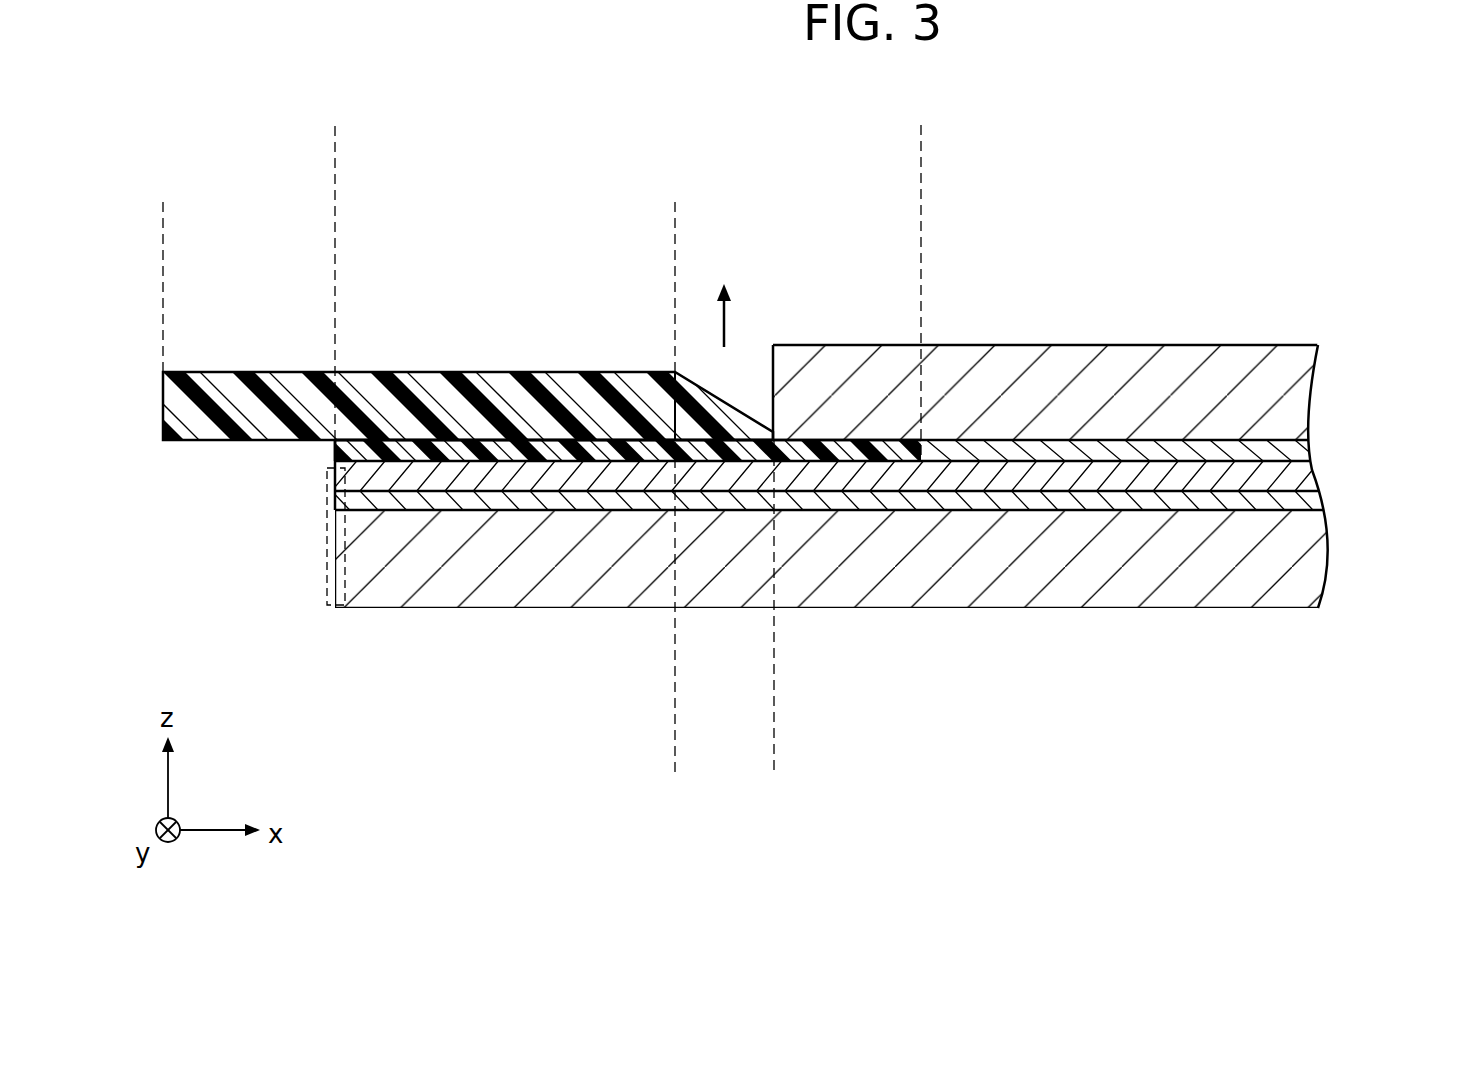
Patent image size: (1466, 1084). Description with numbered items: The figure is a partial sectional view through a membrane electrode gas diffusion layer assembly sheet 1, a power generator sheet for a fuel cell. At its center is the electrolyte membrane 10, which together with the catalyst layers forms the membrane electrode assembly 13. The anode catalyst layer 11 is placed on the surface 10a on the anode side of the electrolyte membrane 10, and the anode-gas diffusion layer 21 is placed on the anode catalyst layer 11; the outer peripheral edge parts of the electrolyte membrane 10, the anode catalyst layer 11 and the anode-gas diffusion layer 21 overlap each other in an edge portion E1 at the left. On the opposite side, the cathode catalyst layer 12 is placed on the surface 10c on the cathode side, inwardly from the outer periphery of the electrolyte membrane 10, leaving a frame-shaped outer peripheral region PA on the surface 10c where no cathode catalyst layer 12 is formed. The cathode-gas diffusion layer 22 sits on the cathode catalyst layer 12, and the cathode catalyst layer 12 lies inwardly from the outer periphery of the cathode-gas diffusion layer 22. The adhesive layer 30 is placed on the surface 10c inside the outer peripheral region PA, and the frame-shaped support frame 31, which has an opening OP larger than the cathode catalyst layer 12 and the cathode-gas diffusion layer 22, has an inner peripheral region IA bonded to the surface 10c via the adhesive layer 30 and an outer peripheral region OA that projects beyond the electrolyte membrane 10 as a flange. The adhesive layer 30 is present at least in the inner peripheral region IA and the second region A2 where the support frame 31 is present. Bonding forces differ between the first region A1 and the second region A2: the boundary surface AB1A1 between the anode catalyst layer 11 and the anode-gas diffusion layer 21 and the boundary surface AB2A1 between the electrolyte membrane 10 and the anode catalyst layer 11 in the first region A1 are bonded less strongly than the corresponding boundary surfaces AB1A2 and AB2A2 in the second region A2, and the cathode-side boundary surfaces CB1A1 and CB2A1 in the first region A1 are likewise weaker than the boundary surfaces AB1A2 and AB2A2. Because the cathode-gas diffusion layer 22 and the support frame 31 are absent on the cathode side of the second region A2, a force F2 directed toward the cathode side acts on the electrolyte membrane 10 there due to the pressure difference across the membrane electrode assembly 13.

The membrane electrode gas diffusion layer assembly sheet 1 is at (1378, 120).
The cathode-gas diffusion layer 22 is at (1268, 373).
The anode-gas diffusion layer 21 is at (1293, 578).
The membrane electrode assembly 13 is at (898, 474).
The cathode catalyst layer 12 is at (1284, 452).
The electrolyte membrane 10 is at (876, 474).
The anode catalyst layer 11 is at (877, 512).
The surface on the cathode side 10c is at (1244, 461).
The surface on the anode side 10a is at (1238, 492).
The support frame 31 is at (177, 403).
The adhesive layer 30 is at (348, 449).
The edge portion E1 is at (327, 529).
The opening OP is at (698, 386).
The force F2 is at (727, 327).
The boundary surface between the electrolyte membrane and the cathode catalyst layer CB2A1 is at (1026, 458).
The boundary surface between the cathode catalyst layer and the cathode-gas diffusio CB1A1 is at (1153, 437).
The boundary surface between the electrolyte membrane and the anode catalyst layer i AB2A1 is at (1027, 495).
The boundary surface between the anode catalyst layer and the anode-gas diffusion la AB1A1 is at (1153, 514).
The boundary surface between the electrolyte membrane and the anode catalyst layer i AB2A2 is at (714, 495).
The boundary surface between the anode catalyst layer and the anode-gas diffusion la AB1A2 is at (752, 514).
The outer peripheral region PA is at (921, 134).
The outer peripheral region of the support frame OA is at (335, 210).
The inner peripheral region IA is at (675, 210).
The first region A1 is at (1320, 750).
The second region A2 is at (774, 762).